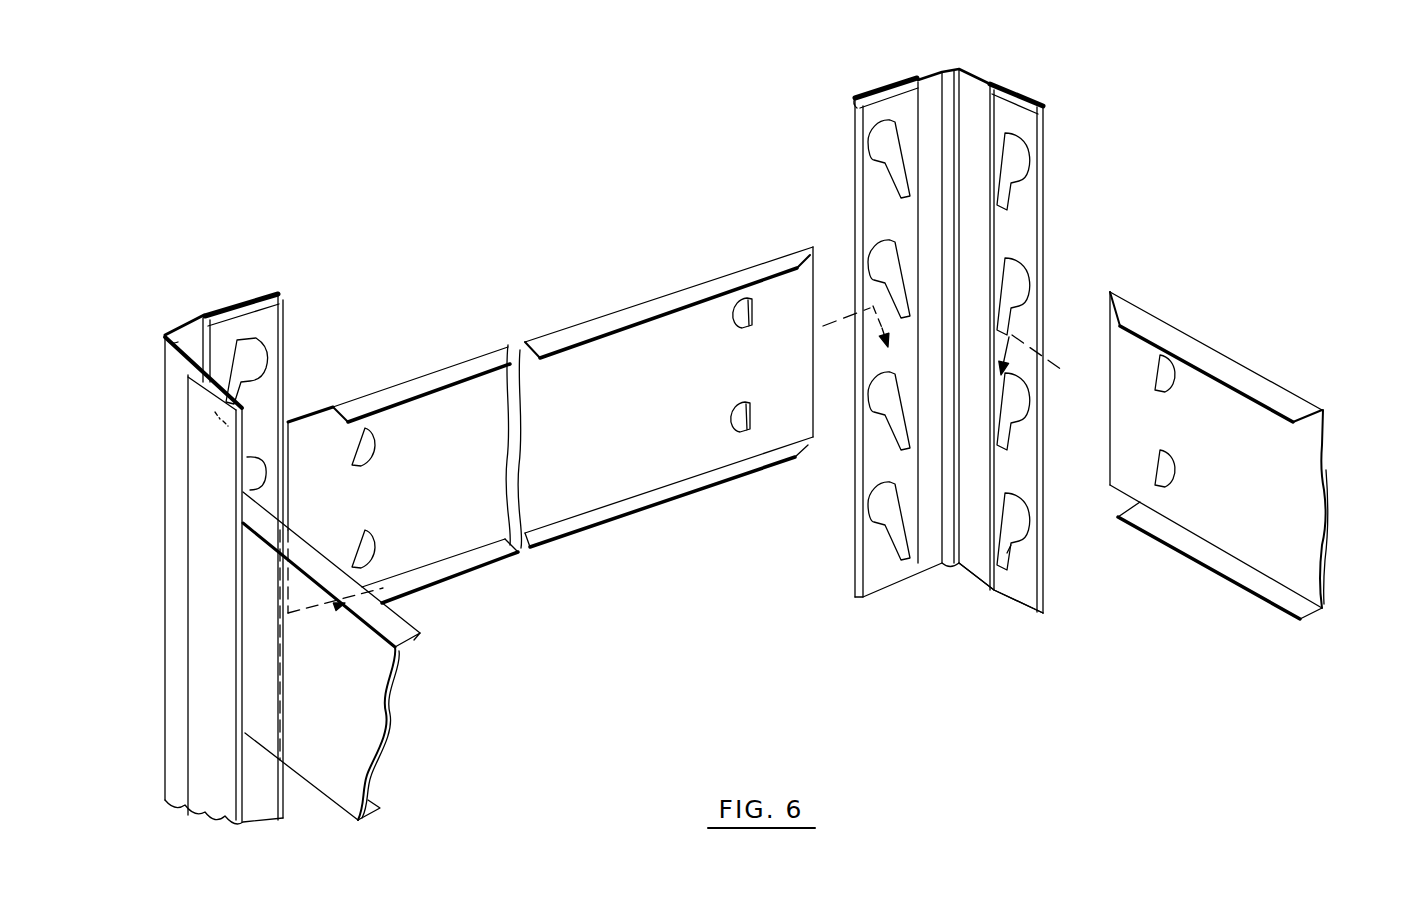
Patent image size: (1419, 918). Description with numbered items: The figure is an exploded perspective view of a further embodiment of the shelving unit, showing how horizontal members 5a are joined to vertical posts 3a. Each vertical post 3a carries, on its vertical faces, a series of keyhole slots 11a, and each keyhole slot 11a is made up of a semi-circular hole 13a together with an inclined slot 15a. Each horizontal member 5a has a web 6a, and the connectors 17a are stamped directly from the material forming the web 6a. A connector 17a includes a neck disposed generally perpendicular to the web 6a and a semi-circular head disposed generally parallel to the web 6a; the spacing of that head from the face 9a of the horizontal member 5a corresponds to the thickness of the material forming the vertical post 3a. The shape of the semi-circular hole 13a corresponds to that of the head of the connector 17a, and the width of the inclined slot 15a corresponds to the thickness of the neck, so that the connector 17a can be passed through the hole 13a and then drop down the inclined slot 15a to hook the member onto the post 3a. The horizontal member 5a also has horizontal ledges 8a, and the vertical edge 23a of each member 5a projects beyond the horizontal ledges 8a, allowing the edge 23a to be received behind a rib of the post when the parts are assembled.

The vertical post 3a is at (912, 57).
The horizontal member 5a is at (588, 494).
The horizontal ledge 8a is at (645, 308).
The face 9a is at (1326, 441).
The web 6a is at (1342, 500).
The connector 17a is at (732, 322).
The vertical edge 23a is at (818, 266).
The semi-circular hole 13a is at (1020, 528).
The keyhole slot 11a is at (1016, 553).
The inclined slot 15a is at (998, 594).